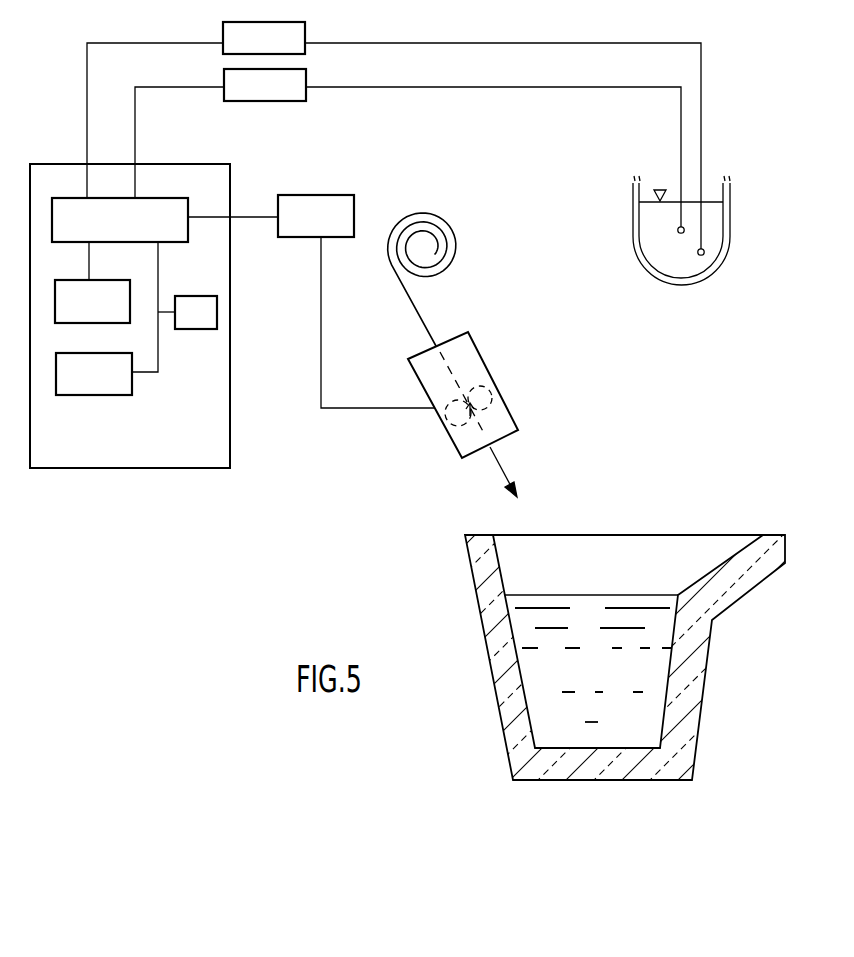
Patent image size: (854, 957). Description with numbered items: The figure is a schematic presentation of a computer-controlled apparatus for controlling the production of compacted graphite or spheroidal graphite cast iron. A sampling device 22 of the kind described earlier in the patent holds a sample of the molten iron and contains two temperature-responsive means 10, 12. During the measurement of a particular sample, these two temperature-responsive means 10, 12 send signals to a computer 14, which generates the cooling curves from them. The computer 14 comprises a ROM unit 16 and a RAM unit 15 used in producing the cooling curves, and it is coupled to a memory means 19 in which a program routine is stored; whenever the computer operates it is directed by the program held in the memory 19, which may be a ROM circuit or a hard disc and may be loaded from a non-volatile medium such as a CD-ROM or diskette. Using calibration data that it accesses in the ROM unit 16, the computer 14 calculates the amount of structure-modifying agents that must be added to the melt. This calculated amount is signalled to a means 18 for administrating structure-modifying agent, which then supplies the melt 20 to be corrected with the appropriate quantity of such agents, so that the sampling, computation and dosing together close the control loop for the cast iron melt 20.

The temperature-responsive means 10 is at (278, 98).
The temperature-responsive means 12 is at (277, 51).
The computer 14 is at (131, 233).
The RAM unit 15 is at (111, 387).
The ROM unit 16 is at (113, 314).
The means for administrating structure-modifying agent 18 is at (328, 229).
The memory means 19 is at (207, 326).
The melt 20 is at (519, 627).
The sampling device 22 is at (672, 286).